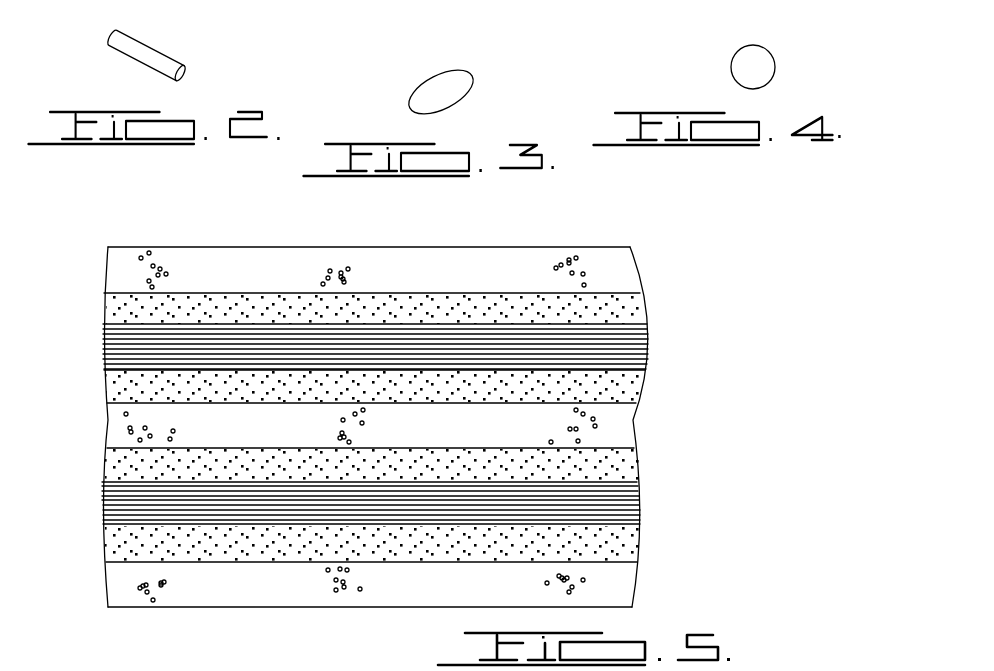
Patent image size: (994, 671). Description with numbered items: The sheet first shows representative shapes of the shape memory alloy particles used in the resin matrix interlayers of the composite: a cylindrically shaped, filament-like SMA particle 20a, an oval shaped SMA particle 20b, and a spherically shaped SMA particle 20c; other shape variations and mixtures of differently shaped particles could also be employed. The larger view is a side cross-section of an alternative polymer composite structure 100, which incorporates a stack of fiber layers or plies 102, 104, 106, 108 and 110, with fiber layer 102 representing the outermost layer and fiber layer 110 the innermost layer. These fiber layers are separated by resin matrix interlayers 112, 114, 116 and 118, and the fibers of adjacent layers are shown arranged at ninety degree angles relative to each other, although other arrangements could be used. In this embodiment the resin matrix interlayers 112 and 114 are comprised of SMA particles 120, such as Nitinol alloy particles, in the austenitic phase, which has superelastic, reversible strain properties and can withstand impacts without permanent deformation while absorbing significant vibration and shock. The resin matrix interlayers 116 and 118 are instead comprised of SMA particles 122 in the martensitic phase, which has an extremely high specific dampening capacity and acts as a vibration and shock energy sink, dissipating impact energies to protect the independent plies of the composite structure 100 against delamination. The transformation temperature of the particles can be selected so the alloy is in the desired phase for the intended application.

In FIG. 2, the cylindrically shaped SMA particle 20a is at (152, 53).
In FIG. 3, the oval shaped SMA particle 20b is at (455, 92).
In FIG. 4, the spherically shaped SMA particle 20c is at (748, 70).
In FIG. 5, the polymer composite structure 100 is at (765, 293).
In FIG. 5, the fiber layer 102 is at (648, 281).
In FIG. 5, the fiber layer 104 is at (656, 356).
In FIG. 5, the fiber layer 106 is at (645, 435).
In FIG. 5, the fiber layer 108 is at (652, 505).
In FIG. 5, the fiber layer 110 is at (649, 593).
In FIG. 5, the resin matrix interlayer 112 is at (659, 322).
In FIG. 5, the resin matrix interlayer 114 is at (651, 393).
In FIG. 5, the resin matrix interlayer 116 is at (646, 471).
In FIG. 5, the resin matrix interlayer 118 is at (649, 550).
In FIG. 5, the SMA particles in the austenitic phase 120 is at (610, 299).
In FIG. 5, the SMA particles in the martensitic phase 122 is at (130, 462).